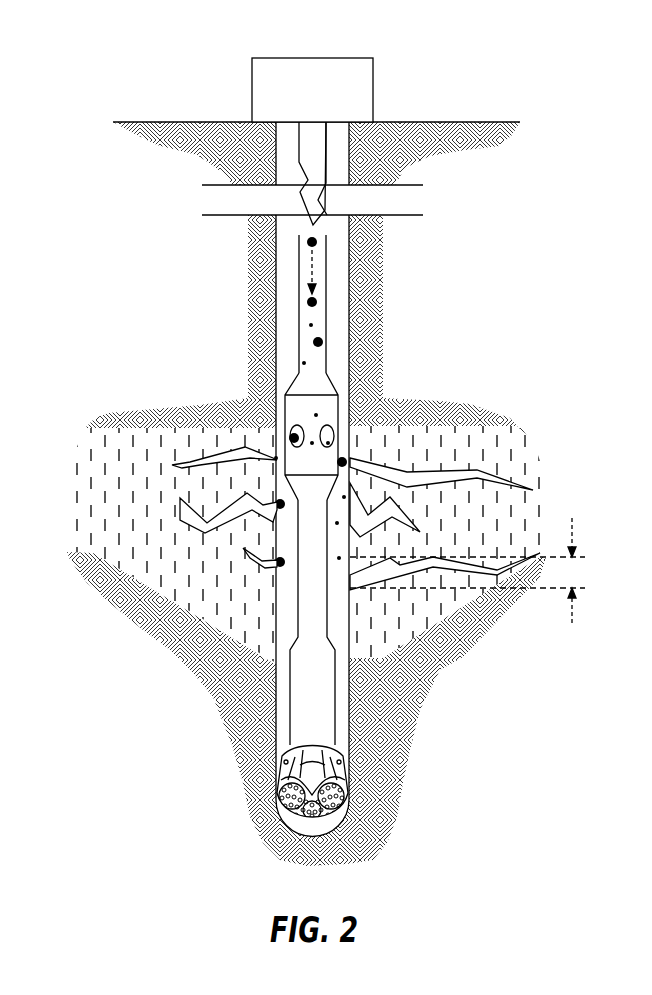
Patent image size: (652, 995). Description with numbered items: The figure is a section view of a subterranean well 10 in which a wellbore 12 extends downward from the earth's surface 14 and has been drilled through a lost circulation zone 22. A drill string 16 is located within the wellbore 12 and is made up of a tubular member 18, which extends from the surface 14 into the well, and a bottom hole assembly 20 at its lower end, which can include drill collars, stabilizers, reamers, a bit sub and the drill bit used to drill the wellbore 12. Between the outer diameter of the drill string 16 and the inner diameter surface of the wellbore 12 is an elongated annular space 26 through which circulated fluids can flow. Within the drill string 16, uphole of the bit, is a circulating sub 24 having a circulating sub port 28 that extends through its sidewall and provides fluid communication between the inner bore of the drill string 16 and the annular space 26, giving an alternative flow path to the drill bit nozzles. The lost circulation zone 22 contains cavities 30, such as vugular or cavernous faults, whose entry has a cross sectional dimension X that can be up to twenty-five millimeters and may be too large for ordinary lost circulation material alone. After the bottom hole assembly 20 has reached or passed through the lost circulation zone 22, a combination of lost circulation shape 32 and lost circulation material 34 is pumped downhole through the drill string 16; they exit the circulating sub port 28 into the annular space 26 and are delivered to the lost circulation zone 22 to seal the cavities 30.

The subterranean well 10 is at (461, 377).
The wellbore 12 is at (281, 364).
The earth's surface 14 is at (457, 122).
The drill string 16 is at (345, 278).
The tubular member 18 is at (300, 297).
The bottom hole assembly 20 is at (283, 773).
The lost circulation zone 22 is at (140, 474).
The circulating sub 24 is at (337, 395).
The annular space 26 is at (285, 308).
The circulating sub port 28 is at (334, 436).
The cavity 30 is at (263, 518).
The lost circulation shape 32 is at (273, 563).
The lost circulation material 34 is at (314, 325).
The cross sectional dimension X is at (570, 610).